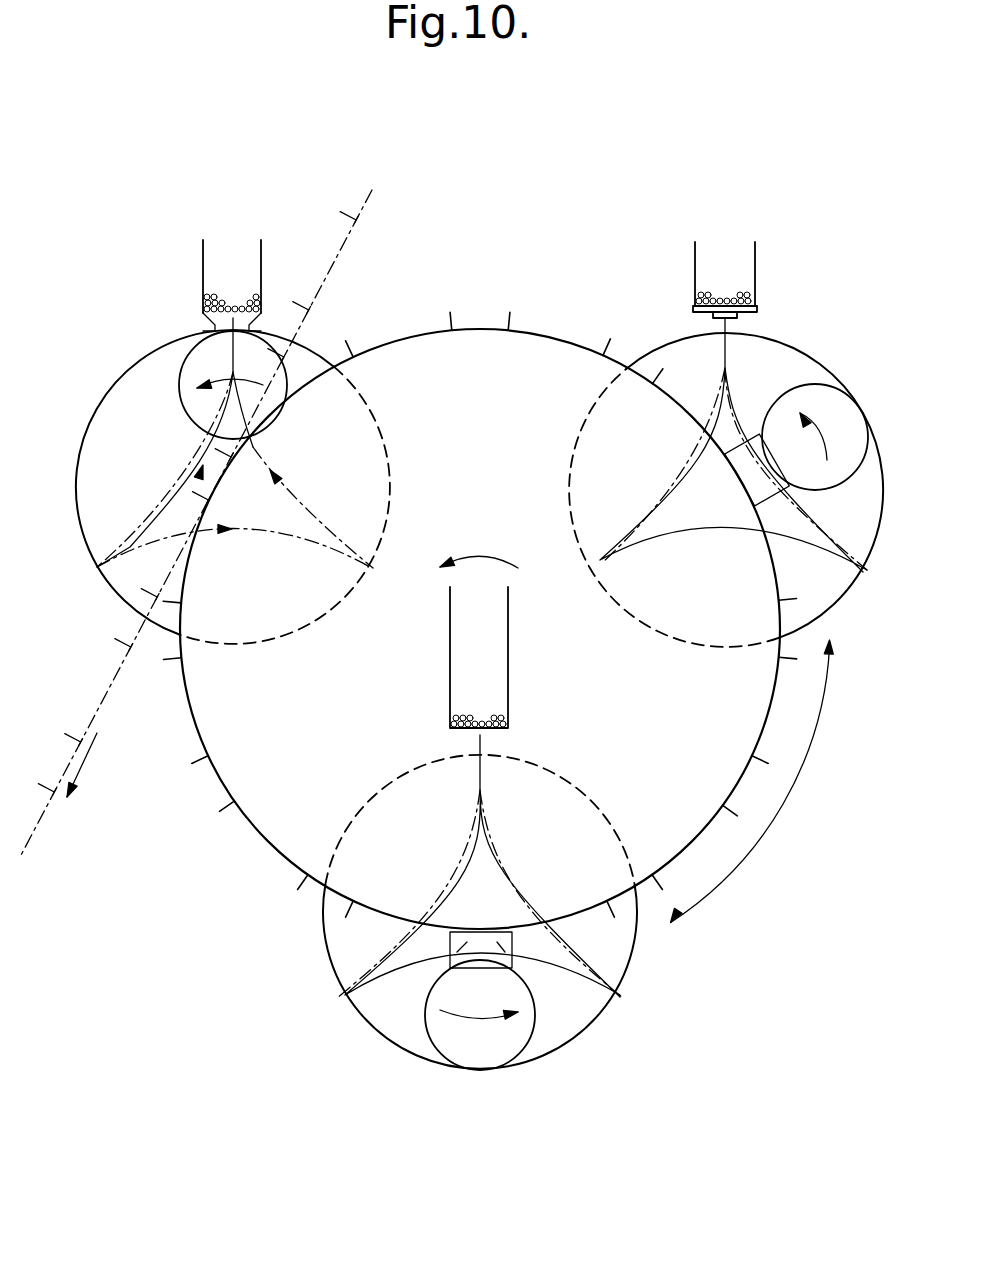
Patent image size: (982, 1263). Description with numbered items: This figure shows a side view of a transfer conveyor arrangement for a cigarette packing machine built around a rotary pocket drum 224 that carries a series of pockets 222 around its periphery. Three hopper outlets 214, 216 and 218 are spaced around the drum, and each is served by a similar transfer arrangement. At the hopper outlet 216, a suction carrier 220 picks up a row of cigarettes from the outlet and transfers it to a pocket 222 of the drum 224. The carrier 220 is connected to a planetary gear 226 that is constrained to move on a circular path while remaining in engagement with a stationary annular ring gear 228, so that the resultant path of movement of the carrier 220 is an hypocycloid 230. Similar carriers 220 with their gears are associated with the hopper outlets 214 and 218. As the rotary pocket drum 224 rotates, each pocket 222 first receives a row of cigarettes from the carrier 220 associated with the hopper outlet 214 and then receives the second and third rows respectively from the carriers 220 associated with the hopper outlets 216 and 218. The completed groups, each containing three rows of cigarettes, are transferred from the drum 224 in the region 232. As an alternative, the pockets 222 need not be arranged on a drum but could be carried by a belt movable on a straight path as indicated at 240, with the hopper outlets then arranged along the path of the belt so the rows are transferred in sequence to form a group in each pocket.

The hopper outlet 214 is at (759, 284).
The hopper outlet 216 is at (197, 267).
The hopper outlet 218 is at (515, 684).
The suction carrier 220 is at (205, 324).
The pocket 222 is at (452, 329).
The rotary pocket drum 224 is at (257, 835).
The planetary gear 226 is at (188, 364).
The stationary annular ring gear 228 is at (388, 466).
The hypocycloid 230 is at (137, 538).
The region 232 is at (793, 783).
The straight path 240 is at (47, 808).